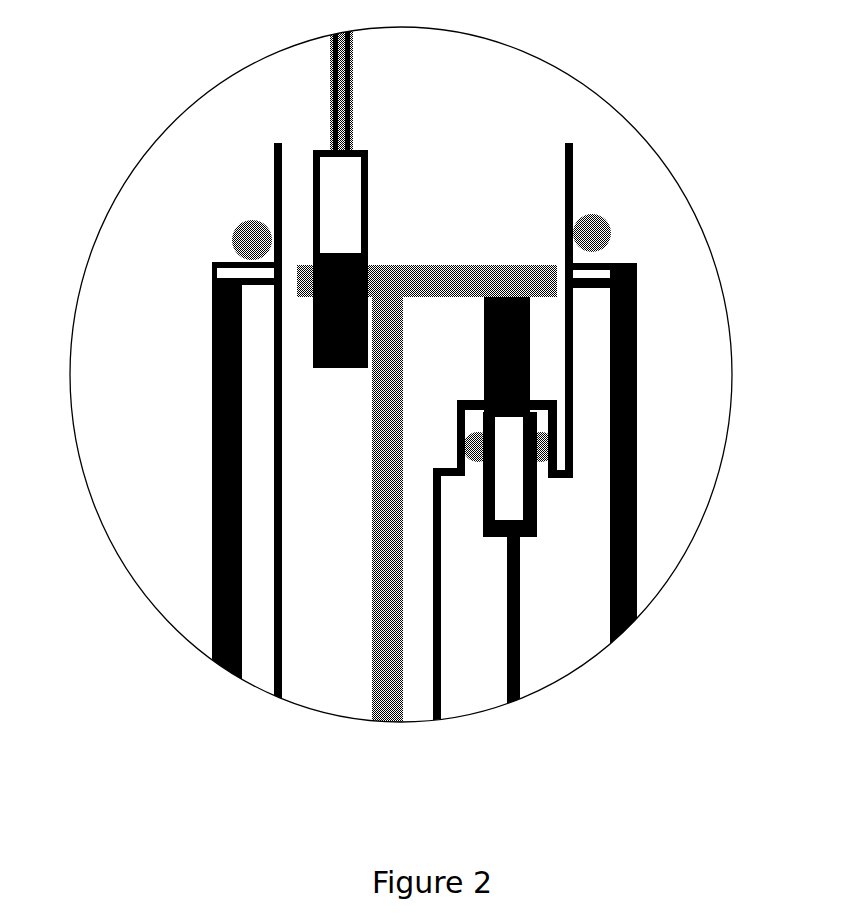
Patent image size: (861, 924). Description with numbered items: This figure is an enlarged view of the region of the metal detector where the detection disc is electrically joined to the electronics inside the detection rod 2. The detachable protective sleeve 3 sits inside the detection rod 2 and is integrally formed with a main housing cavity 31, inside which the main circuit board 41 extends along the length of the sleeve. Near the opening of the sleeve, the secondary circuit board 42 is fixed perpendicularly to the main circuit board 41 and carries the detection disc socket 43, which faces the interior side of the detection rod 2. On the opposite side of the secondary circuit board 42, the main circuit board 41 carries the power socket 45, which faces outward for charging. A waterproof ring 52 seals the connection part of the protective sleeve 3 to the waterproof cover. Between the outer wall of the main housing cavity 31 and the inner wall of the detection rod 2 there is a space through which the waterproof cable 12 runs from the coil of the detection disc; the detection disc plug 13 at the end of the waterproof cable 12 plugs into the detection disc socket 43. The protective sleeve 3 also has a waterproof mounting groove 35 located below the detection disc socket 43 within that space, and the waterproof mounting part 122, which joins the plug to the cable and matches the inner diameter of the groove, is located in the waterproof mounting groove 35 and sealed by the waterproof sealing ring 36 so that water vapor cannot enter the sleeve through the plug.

The detection rod 2 is at (211, 428).
The protective sleeve 3 is at (273, 345).
The waterproof cable 12 is at (522, 670).
The detection disc plug 13 is at (530, 368).
The main housing cavity 31 is at (300, 520).
The waterproof mounting groove 35 is at (543, 423).
The waterproof sealing ring 36 is at (553, 458).
The main circuit board 41 is at (385, 593).
The secondary circuit board 42 is at (428, 270).
The detection disc socket 43 is at (553, 401).
The power socket 45 is at (300, 263).
The waterproof ring 52 is at (603, 220).
The waterproof mounting part 122 is at (515, 503).